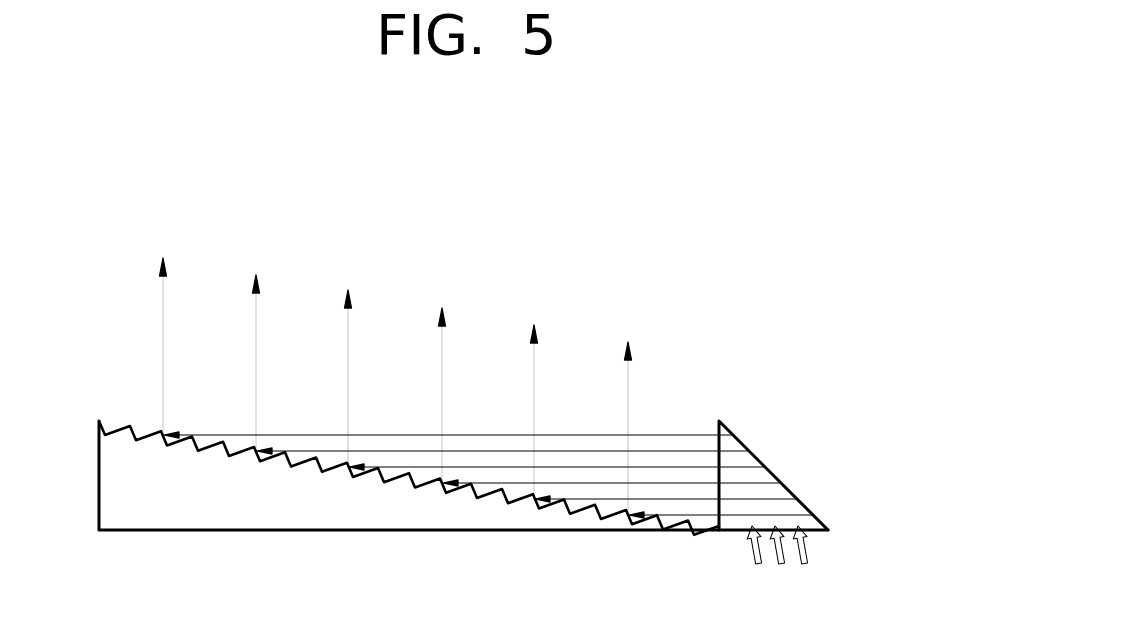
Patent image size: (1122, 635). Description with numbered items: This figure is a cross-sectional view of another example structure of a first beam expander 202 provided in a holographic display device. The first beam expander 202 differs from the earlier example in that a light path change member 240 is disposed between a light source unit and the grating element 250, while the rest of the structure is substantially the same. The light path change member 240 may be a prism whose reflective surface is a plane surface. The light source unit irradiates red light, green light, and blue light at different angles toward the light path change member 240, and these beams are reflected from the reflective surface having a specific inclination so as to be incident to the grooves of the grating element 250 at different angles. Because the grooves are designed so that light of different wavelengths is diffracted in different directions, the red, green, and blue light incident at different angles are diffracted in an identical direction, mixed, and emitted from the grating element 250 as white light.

The first beam expander 202 is at (719, 294).
The light path change member 240 is at (760, 458).
The grating element 250 is at (229, 518).